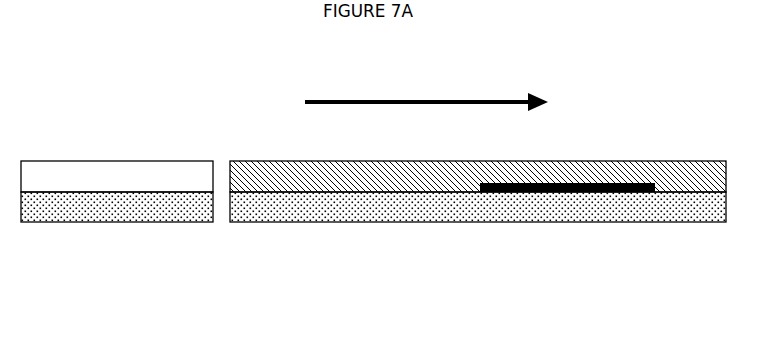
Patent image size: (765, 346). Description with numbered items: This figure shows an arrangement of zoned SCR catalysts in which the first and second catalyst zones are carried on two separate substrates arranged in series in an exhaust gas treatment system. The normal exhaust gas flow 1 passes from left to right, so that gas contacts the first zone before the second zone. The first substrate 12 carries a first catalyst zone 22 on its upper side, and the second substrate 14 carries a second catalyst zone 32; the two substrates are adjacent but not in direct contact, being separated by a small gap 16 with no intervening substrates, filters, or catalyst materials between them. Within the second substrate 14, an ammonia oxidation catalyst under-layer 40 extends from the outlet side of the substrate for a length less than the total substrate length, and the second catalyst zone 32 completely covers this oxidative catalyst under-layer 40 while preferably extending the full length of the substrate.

The exhaust gas flow 1 is at (344, 101).
The first substrate 12 is at (138, 205).
The second substrate 14 is at (370, 207).
The gap between substrates 16 is at (226, 206).
The first layer on first substrate 22 is at (162, 178).
The adhesive layer on second substrate 32 is at (512, 179).
The ammonia oxidation catalyst under-layer 40 is at (623, 183).